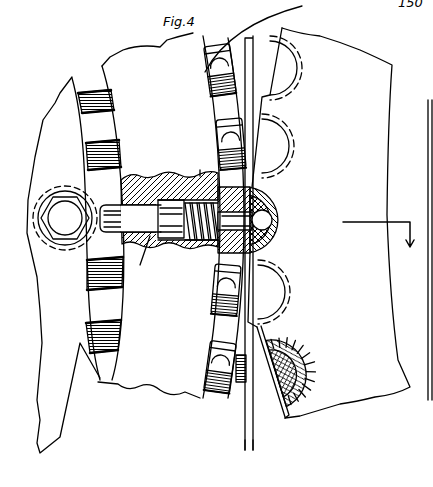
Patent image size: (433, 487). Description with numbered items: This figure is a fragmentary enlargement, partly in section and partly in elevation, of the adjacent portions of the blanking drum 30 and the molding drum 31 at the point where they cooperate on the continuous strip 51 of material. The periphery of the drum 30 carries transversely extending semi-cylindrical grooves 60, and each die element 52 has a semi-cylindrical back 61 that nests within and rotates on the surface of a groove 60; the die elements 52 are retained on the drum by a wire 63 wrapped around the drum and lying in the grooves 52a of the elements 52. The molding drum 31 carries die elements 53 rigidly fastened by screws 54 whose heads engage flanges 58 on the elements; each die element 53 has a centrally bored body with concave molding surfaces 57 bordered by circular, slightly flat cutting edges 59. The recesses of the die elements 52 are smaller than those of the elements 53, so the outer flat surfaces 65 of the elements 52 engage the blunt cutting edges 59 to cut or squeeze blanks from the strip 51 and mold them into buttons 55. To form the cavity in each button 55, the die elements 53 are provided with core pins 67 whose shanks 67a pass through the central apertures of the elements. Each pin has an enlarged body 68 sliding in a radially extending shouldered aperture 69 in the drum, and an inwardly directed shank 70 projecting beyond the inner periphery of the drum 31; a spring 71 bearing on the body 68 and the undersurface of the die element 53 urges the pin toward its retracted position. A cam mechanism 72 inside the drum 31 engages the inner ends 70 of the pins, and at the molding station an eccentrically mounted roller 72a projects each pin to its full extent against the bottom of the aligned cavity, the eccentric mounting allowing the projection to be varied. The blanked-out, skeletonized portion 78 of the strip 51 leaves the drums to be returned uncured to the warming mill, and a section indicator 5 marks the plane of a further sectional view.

The section line 5- 5 is at (378, 246).
The blanking drum 30 is at (333, 401).
The molding drum 31 is at (135, 380).
The continuous strip 51 is at (252, 103).
The die element 52 is at (291, 60).
The groove 52a is at (306, 386).
The die element 53 is at (216, 407).
The screw 54 is at (207, 67).
The button 55 is at (285, 241).
The molding surface 57 is at (228, 255).
The flange 58 is at (222, 290).
The cutting edge 59 is at (262, 38).
The semi-cylindrical groove 60 is at (294, 208).
The back 61 is at (285, 154).
The wire 63 is at (283, 413).
The outer flat surface 65 is at (282, 76).
The core pin 67 is at (116, 237).
The shank 67a is at (208, 247).
The enlarged body 68 is at (168, 180).
The shouldered aperture 69 is at (175, 243).
The inwardly directed shank 70 is at (97, 97).
The spring 71 is at (205, 185).
The cam mechanism 72 is at (47, 104).
The roller 72a is at (80, 182).
The skeletonized strip 78 is at (243, 436).